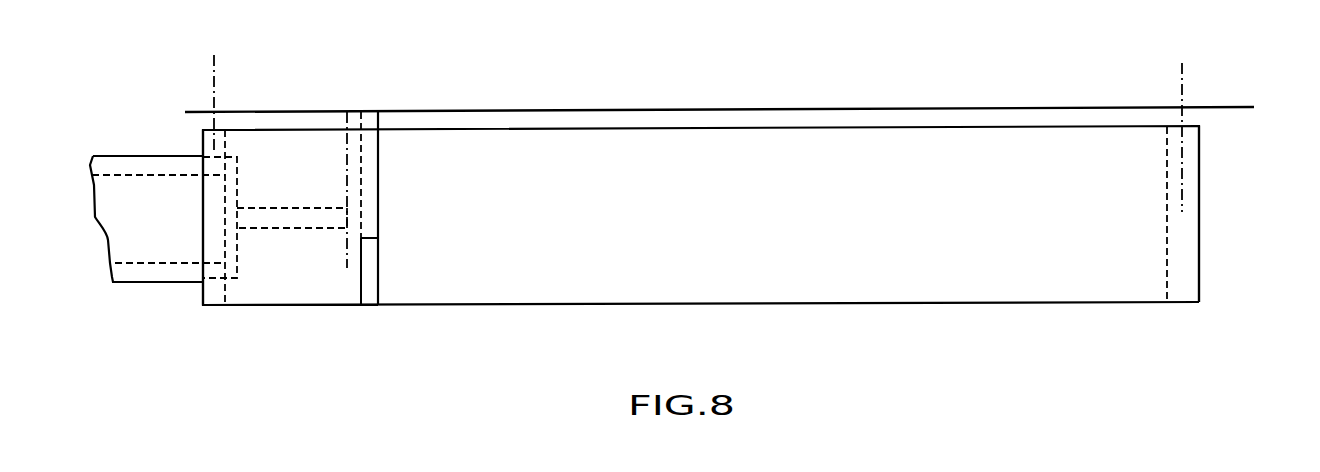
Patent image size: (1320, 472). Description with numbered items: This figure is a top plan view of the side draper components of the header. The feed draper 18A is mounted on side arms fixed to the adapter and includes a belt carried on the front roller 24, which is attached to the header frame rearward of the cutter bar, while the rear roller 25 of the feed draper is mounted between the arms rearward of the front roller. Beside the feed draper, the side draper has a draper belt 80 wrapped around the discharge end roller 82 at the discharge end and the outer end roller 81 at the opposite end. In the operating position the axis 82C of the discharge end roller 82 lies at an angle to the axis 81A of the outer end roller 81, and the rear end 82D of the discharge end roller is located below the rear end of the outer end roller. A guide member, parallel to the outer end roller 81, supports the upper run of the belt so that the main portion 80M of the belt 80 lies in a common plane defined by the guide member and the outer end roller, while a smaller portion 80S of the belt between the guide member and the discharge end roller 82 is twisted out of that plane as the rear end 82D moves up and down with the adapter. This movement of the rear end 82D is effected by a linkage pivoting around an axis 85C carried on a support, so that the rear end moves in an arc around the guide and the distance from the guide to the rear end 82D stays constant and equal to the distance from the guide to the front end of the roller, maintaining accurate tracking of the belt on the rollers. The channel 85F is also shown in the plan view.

The feed draper 18A is at (133, 213).
The rear roller 25 is at (148, 167).
The front roller 24 is at (137, 268).
The discharge end roller 82 is at (213, 293).
The axis of the discharge end roller 82C is at (214, 68).
The rear end of the discharge end roller 82D is at (218, 130).
The pivot axis 85C is at (347, 177).
The flow channel 85F is at (260, 220).
The draper belt 80 is at (987, 230).
The main portion of the belt 80M is at (853, 260).
The smaller portion of the draper belt 80S is at (267, 283).
The outer end roller 81 is at (1175, 287).
The axis of the outer end roller 81A is at (1182, 75).